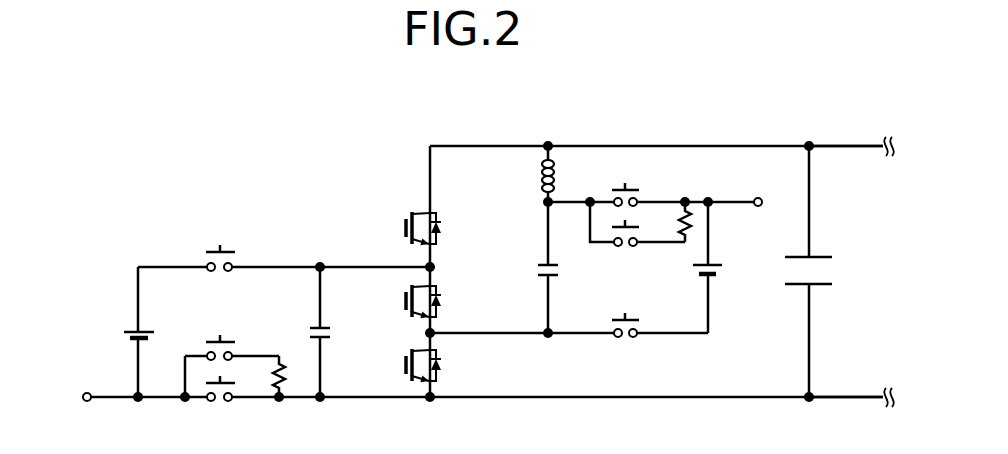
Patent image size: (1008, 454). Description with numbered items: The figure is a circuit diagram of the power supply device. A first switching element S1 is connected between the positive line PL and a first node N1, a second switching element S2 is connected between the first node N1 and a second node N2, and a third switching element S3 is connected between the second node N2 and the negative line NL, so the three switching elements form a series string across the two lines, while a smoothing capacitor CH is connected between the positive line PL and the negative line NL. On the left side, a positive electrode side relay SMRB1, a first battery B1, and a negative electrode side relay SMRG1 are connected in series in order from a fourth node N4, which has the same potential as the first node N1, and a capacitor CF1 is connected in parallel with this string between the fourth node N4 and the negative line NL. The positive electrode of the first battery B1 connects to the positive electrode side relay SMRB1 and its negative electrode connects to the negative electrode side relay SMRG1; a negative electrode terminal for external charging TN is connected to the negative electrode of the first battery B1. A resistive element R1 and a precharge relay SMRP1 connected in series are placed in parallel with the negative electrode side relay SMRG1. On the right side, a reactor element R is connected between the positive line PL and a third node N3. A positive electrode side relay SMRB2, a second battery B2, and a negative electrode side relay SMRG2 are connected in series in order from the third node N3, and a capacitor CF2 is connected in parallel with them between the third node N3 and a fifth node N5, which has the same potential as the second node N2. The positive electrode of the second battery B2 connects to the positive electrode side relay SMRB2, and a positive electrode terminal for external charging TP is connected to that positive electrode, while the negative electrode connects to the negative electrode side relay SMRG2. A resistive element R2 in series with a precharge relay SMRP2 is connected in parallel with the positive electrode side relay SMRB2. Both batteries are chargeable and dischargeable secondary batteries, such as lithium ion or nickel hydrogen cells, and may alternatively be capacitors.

The negative electrode terminal for external charging TN is at (84, 394).
The first battery B1 is at (123, 332).
The positive electrode side relay SMRB1 is at (220, 246).
The precharge relay SMRP1 is at (229, 353).
The negative electrode side relay SMRG1 is at (221, 404).
The resistive element R1 is at (263, 376).
The capacitor CF1 is at (301, 332).
The fourth node N4 is at (320, 262).
The first switching element S1 is at (404, 228).
The second switching element S2 is at (404, 301).
The third switching element S3 is at (404, 365).
The first node N1 is at (434, 263).
The second node N2 is at (434, 330).
The reactor element R is at (533, 174).
The third node N3 is at (544, 206).
The capacitor CF2 is at (528, 267).
The fifth node N5 is at (543, 338).
The positive electrode side relay SMRB2 is at (620, 181).
The precharge relay SMRP2 is at (632, 239).
The negative electrode side relay SMRG2 is at (621, 339).
The resistive element R2 is at (668, 222).
The second battery B2 is at (725, 267).
The positive electrode terminal for external charging TP is at (763, 202).
The positive line PL is at (840, 145).
The smoothing capacitor CH is at (813, 271).
The negative line NL is at (845, 400).